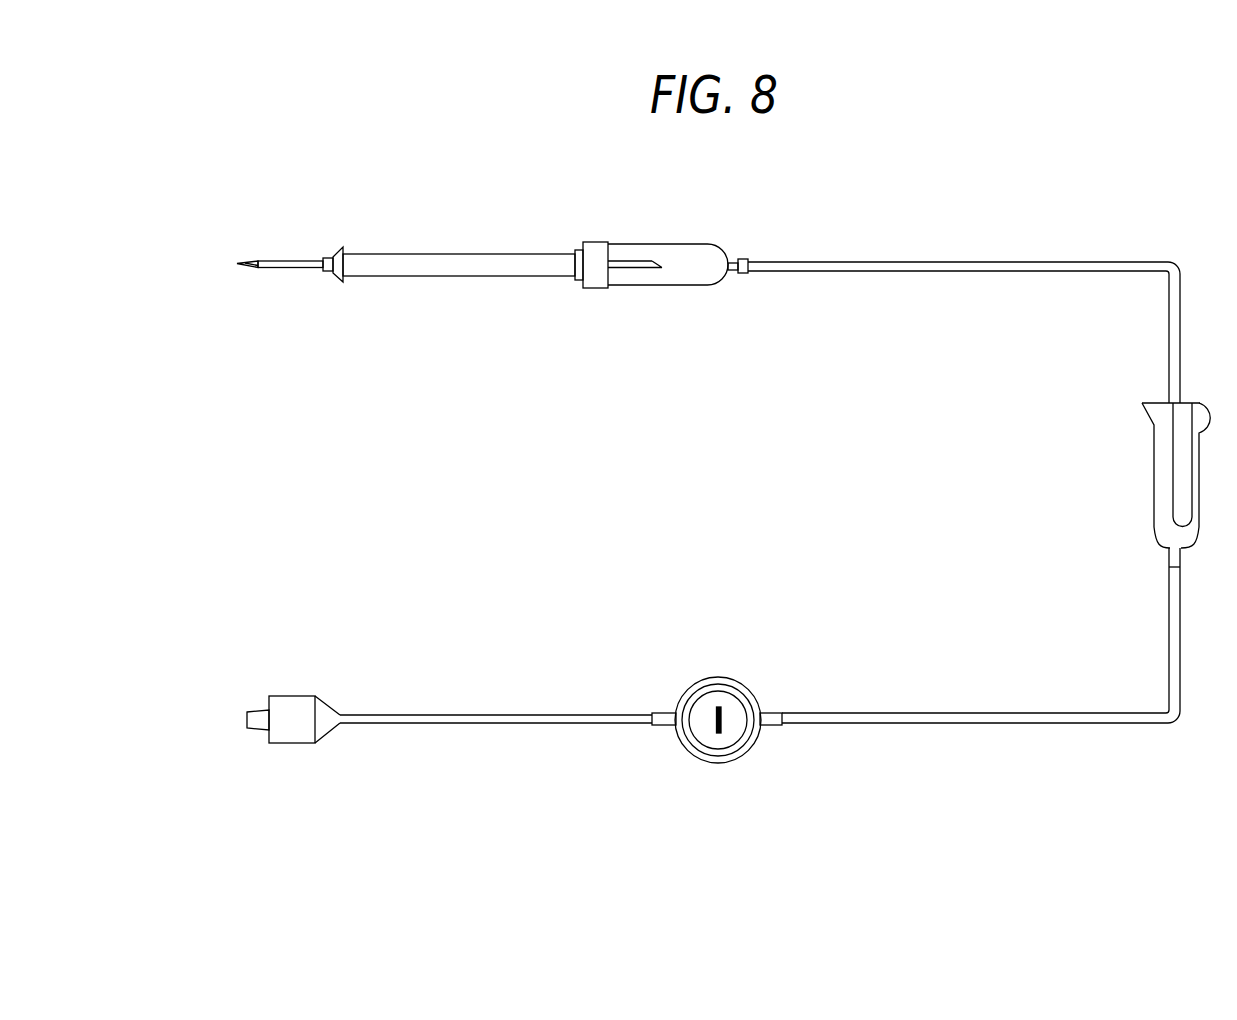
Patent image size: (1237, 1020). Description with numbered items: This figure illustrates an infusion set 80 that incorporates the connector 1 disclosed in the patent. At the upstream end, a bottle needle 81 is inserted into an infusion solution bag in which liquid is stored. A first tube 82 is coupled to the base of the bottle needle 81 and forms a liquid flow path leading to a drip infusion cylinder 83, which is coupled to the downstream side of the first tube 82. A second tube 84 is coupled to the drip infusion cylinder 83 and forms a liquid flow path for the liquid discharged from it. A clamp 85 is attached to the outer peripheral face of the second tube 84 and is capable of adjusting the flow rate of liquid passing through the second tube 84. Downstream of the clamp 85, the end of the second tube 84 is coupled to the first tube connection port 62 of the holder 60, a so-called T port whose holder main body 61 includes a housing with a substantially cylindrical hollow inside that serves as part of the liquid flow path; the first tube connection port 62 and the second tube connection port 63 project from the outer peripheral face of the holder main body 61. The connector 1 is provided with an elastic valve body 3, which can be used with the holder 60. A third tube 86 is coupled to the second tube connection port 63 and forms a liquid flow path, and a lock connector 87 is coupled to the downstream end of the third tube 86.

The infusion set 80 is at (524, 205).
The bottle needle 81 is at (275, 262).
The first tube 82 is at (429, 268).
The drip infusion cylinder 83 is at (706, 260).
The second tube 84 is at (1168, 262).
The clamp 85 is at (1160, 464).
The third tube 86 is at (493, 715).
The lock connector 87 is at (283, 700).
The holder 60 is at (805, 628).
The holder main body 61 is at (723, 677).
The first tube connection port 62 is at (770, 714).
The second tube connection port 63 is at (663, 714).
The connector 1 is at (676, 755).
The elastic valve body 3 is at (735, 732).